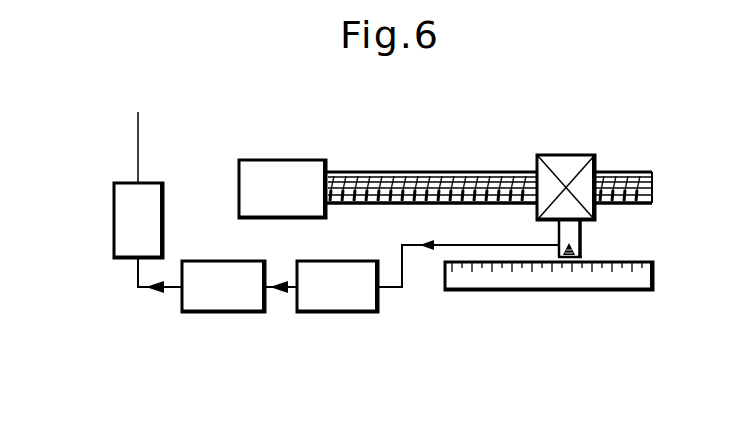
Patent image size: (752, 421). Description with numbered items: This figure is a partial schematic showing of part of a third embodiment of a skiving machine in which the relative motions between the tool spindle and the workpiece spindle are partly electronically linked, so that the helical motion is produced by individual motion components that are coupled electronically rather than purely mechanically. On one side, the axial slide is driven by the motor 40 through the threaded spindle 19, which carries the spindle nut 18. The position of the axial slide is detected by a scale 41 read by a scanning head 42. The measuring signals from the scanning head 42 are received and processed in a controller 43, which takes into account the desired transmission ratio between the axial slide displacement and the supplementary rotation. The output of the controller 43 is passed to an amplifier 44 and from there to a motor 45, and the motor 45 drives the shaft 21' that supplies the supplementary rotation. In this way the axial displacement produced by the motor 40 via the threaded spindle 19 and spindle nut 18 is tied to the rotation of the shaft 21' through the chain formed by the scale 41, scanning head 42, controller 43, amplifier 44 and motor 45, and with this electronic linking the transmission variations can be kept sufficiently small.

The spindle nut 18 is at (575, 165).
The threaded spindle 19 is at (466, 166).
The shaft 21' is at (101, 142).
The motor 40 is at (292, 165).
The scale 41 is at (589, 280).
The scanning head 42 is at (572, 240).
The controller 43 is at (336, 313).
The amplifier 44 is at (223, 313).
The motor 45 is at (113, 223).